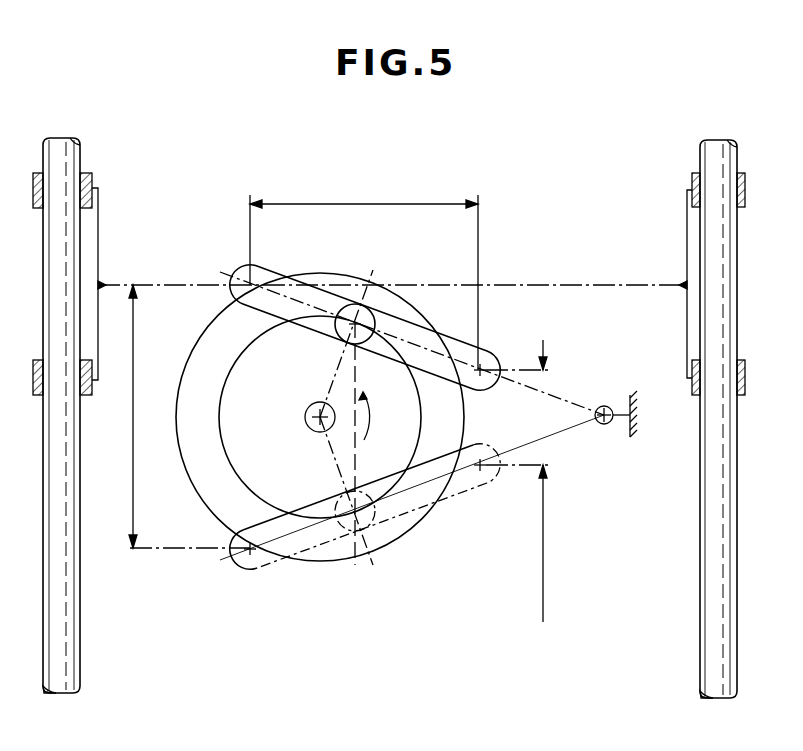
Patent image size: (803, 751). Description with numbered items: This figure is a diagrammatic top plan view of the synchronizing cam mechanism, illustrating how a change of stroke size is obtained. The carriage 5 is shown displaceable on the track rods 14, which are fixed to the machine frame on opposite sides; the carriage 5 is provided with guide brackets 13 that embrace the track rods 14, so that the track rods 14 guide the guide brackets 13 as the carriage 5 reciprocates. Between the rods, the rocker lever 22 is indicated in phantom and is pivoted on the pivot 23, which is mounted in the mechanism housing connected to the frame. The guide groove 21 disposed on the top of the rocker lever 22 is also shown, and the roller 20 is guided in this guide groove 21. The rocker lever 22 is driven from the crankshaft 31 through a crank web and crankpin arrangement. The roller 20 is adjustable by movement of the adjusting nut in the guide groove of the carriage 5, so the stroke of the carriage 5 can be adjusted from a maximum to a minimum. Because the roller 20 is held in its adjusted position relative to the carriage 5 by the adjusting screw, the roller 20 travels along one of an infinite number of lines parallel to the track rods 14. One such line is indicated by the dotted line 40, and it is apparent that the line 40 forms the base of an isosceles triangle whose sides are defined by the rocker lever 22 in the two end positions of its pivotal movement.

The carriage 5 is at (98, 238).
The guide brackets 13 is at (740, 173).
The track rods 14 is at (60, 257).
The roller 20 is at (388, 522).
The guide groove 21 is at (470, 347).
The rocker lever 22 is at (548, 393).
The pivot 23 is at (606, 425).
The crankshaft 31 is at (312, 408).
The line 40 is at (353, 455).